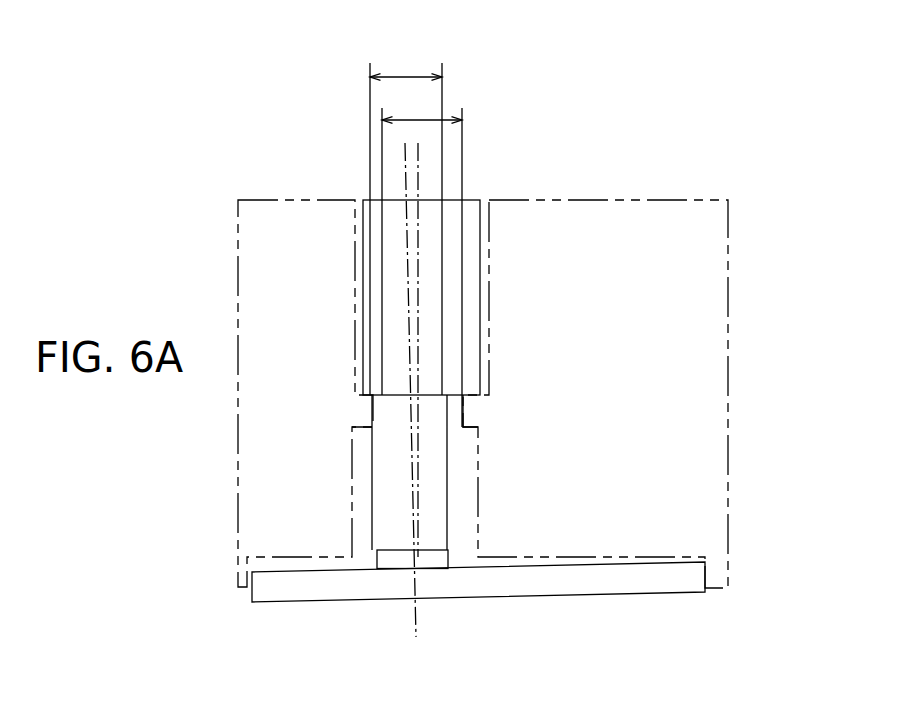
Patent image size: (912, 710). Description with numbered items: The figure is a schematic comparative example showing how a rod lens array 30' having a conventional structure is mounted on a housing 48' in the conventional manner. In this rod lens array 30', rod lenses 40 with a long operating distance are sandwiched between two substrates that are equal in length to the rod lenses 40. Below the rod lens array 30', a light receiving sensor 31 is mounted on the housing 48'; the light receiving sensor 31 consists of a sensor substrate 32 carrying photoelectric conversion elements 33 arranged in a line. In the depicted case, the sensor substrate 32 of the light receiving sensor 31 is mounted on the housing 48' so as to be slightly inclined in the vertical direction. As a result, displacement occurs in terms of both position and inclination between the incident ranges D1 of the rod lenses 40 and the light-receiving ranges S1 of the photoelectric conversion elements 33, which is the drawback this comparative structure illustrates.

The housing 48' is at (483, 351).
The rod lens array 30' is at (452, 387).
The rod lens 40 is at (452, 210).
The photoelectric conversion element 33 is at (397, 562).
The sensor substrate 32 is at (505, 588).
The light receiving sensor 31 is at (479, 625).
The light-receiving range S1 is at (397, 74).
The incident range D1 is at (423, 117).